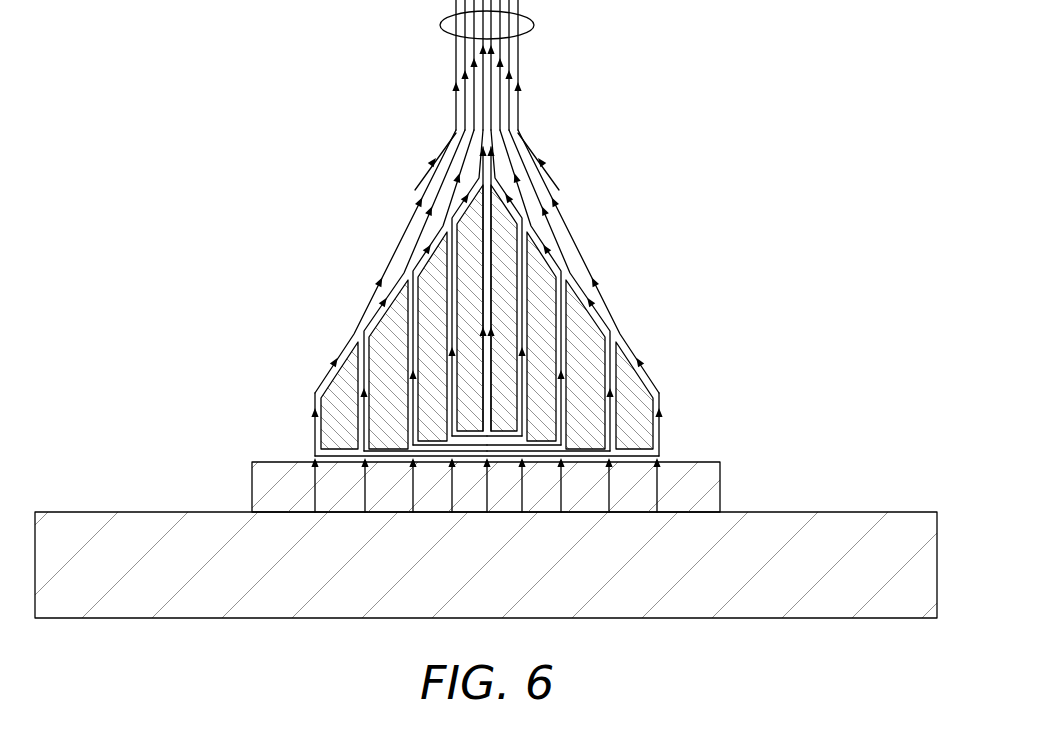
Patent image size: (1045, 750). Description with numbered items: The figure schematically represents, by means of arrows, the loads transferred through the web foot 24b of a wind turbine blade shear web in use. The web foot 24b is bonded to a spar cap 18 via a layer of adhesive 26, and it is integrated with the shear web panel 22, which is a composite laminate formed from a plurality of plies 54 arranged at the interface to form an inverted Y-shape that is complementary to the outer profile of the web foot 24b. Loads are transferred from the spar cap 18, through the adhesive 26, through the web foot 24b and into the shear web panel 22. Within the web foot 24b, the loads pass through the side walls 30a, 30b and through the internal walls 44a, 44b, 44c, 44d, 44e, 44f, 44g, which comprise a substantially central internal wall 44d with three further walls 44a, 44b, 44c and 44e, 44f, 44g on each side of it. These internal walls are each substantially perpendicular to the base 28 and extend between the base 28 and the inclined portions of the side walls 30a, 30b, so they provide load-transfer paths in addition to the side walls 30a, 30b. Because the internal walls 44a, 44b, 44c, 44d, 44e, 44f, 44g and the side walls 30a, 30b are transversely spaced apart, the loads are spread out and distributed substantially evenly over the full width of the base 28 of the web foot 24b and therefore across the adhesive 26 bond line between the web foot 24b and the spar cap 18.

The spar cap 18 is at (913, 518).
The shear web panel 22 is at (540, 78).
The web foot 24b is at (444, 250).
The adhesive 26 is at (712, 471).
The base 28 is at (541, 461).
The side wall 30a is at (352, 210).
The side wall 30b is at (620, 210).
The internal wall 44a is at (358, 375).
The internal wall 44b is at (410, 343).
The internal wall 44c is at (453, 310).
The central internal wall 44d is at (495, 297).
The internal wall 44e is at (525, 338).
The internal wall 44f is at (562, 387).
The internal wall 44g is at (608, 418).
The plies 54 is at (440, 27).